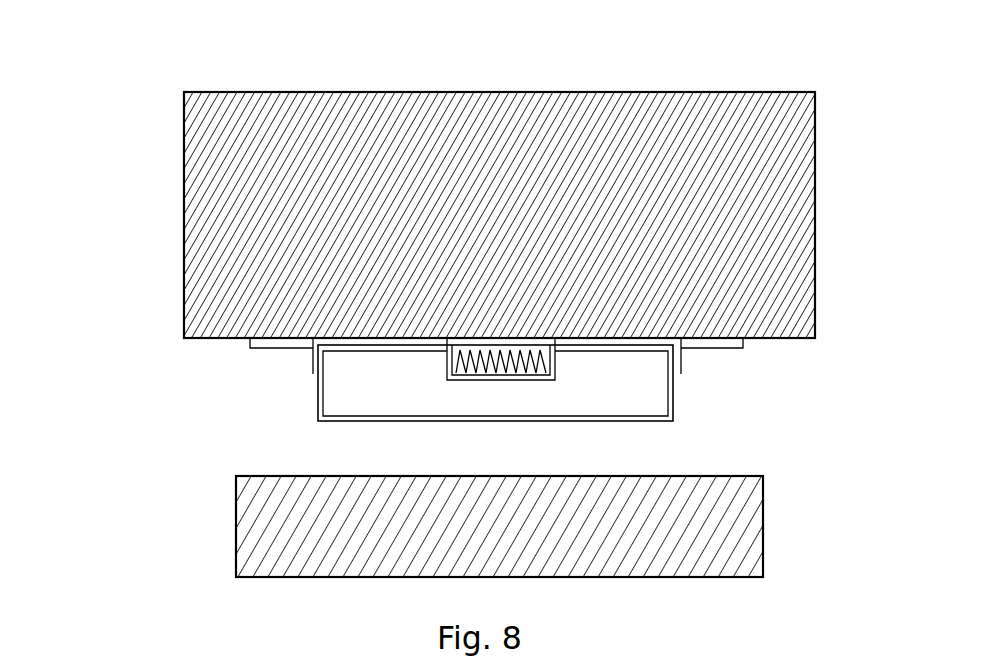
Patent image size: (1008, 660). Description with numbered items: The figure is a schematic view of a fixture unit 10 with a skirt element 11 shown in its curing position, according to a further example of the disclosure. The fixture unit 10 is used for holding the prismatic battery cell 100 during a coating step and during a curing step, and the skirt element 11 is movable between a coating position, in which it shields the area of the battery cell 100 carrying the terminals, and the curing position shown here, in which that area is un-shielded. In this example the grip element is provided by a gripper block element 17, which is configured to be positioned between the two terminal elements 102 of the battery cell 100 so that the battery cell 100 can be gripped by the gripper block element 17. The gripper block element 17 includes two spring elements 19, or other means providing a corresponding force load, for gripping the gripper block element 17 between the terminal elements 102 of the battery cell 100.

The battery cell 100 is at (152, 150).
The terminal elements 102 is at (258, 348).
The fixture unit 10 is at (182, 458).
The spring elements 19 is at (320, 392).
The gripper block element 17 is at (675, 395).
The skirt element 11 is at (763, 502).